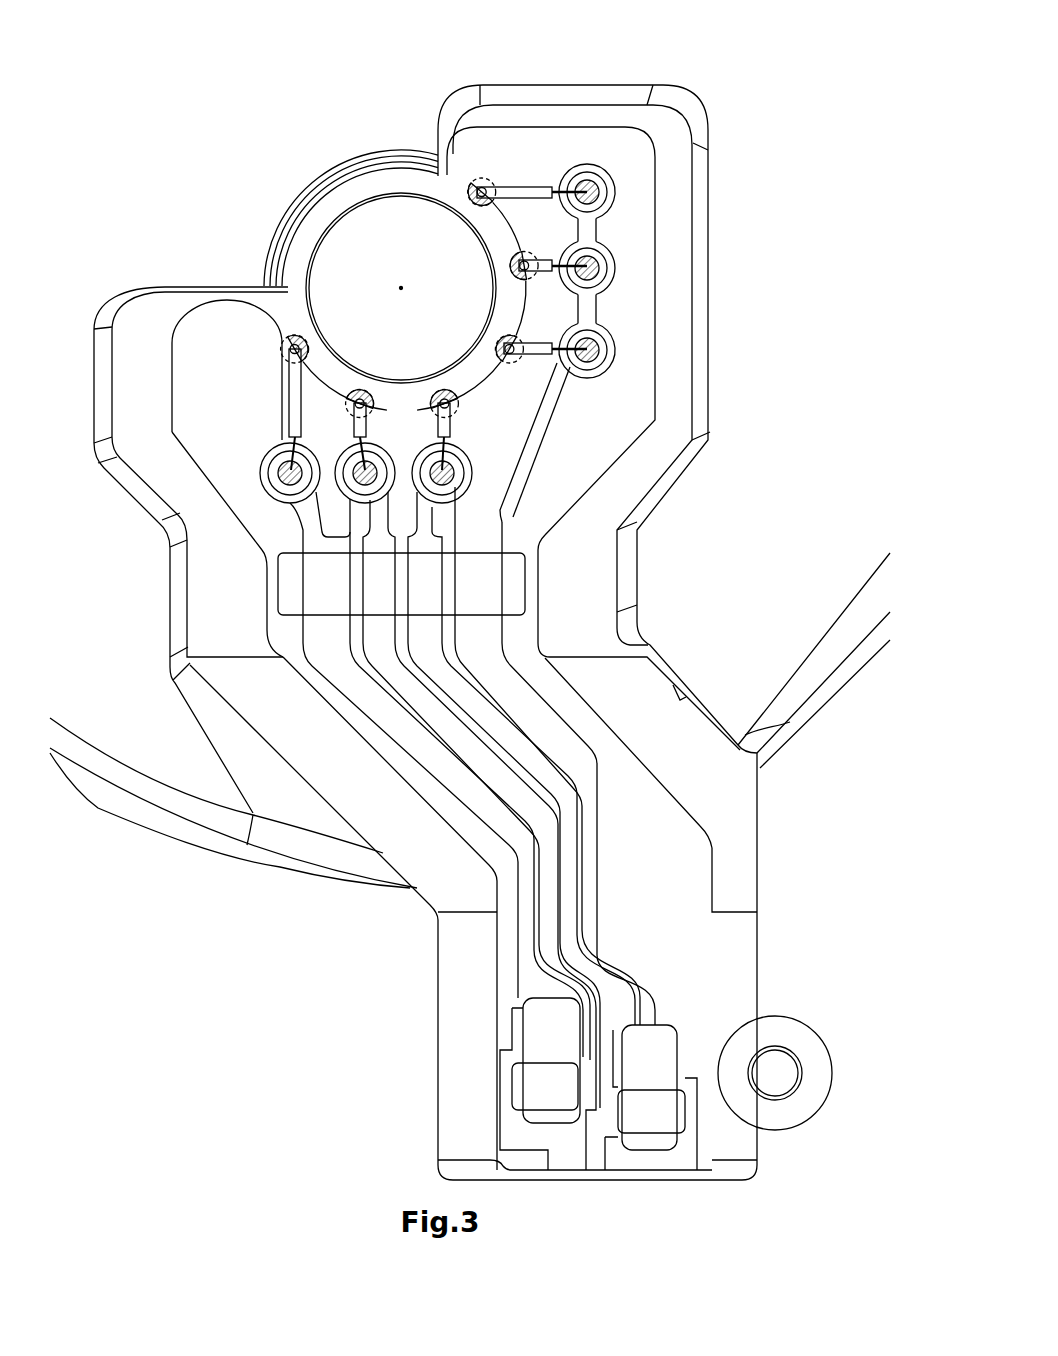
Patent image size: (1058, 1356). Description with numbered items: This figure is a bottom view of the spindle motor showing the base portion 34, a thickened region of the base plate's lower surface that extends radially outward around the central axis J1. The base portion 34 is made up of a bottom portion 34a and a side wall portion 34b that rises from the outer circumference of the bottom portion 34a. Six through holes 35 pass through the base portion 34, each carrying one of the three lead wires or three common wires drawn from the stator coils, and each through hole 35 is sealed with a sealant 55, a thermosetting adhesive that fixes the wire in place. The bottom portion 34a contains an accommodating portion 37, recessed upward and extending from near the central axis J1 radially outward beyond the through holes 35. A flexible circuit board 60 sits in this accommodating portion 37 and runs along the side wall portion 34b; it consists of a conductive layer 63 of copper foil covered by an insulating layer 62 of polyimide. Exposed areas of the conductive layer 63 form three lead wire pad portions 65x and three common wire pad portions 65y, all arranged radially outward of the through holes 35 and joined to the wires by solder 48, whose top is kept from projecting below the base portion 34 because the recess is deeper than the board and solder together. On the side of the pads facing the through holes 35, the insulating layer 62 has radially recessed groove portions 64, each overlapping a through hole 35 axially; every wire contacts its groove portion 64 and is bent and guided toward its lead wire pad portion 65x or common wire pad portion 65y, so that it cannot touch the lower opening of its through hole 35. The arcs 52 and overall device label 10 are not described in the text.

The motor unit 10 is at (437, 26).
The accommodating portion 37 is at (598, 112).
The central axis J1 is at (399, 284).
The stator holder arcs 52 is at (337, 217).
The insulating layer 62 is at (225, 305).
The through holes 35 is at (463, 194).
The sealant 55 is at (500, 265).
The groove portions 64 is at (480, 178).
The solder 48 is at (602, 176).
The common wire pad portions 65y is at (602, 173).
The lead wire pad portions 65x is at (278, 490).
The conductive layer 63 is at (598, 238).
The flexible circuit board 60 is at (497, 1035).
The base portion 34 is at (155, 778).
The bottom portion 34a is at (822, 655).
The side wall portion 34b is at (700, 712).